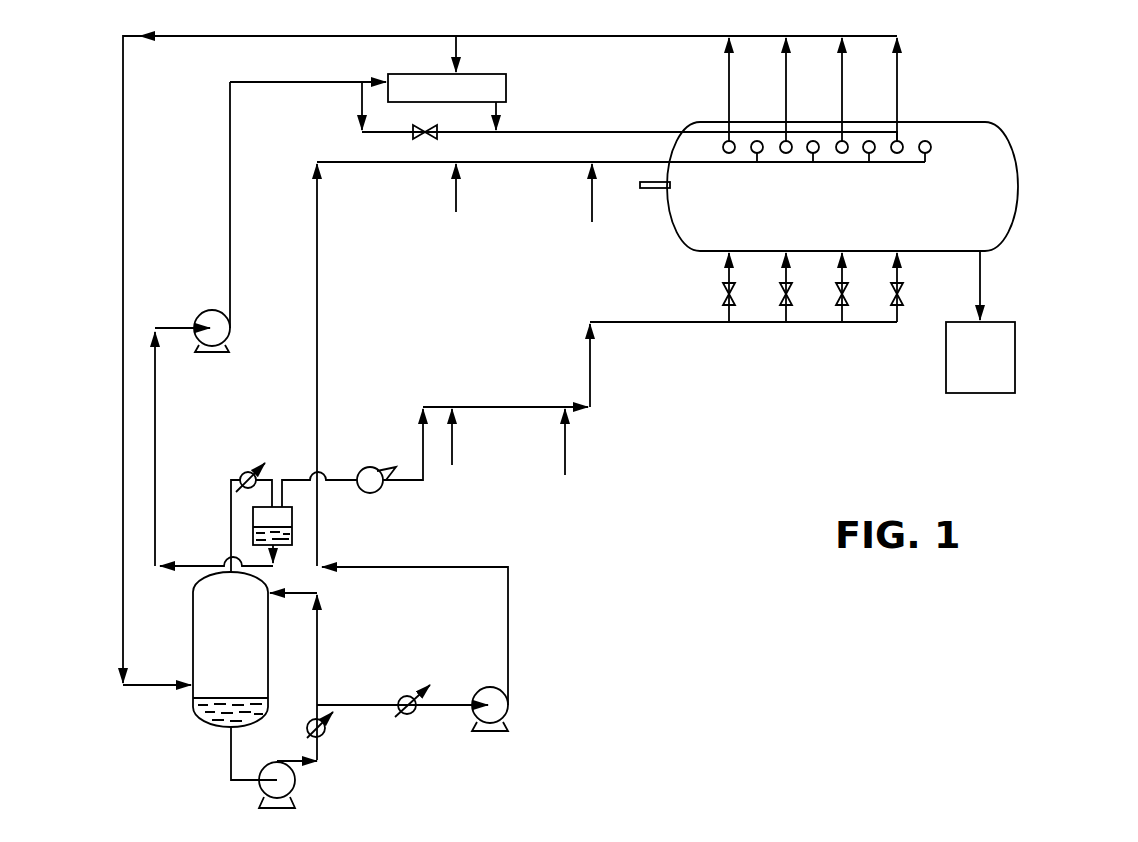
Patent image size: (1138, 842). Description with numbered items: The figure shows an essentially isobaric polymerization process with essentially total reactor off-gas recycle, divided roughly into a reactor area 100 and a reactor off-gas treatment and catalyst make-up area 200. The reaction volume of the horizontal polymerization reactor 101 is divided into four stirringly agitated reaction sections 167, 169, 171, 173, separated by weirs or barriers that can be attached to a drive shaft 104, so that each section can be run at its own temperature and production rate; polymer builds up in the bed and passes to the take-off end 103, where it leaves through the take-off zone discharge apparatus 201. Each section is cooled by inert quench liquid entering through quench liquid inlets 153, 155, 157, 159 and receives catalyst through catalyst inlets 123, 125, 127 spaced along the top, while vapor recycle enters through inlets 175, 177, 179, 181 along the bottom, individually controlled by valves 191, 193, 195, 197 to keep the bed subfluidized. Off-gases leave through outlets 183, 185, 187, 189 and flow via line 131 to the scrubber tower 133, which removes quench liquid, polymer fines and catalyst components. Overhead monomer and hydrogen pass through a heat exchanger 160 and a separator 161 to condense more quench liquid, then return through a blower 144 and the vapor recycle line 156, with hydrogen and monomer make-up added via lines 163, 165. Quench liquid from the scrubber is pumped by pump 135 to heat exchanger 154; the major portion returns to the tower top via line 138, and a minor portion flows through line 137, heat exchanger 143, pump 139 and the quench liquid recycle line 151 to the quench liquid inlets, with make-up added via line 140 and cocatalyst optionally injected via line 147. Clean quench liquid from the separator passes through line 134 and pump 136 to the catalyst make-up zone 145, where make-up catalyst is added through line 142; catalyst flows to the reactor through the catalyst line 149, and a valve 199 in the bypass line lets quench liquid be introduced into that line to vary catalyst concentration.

The reactor area 100 is at (892, 153).
The horizontal polymerization reactor 101 is at (1024, 184).
The take-off end 103 is at (1012, 222).
The drive shaft 104 is at (652, 188).
The catalyst inlet 123 is at (723, 143).
The catalyst inlet 125 is at (783, 142).
The catalyst inlet 127 is at (840, 142).
The off-gas line 131 is at (602, 38).
The scrubber tower 133 is at (205, 625).
The quench liquid line 134 is at (157, 398).
The pump 135 is at (297, 778).
The pump 136 is at (217, 311).
The quench liquid line 137 is at (367, 705).
The return line 138 is at (317, 633).
The pump 139 is at (505, 687).
The quench liquid make-up line 140 is at (454, 197).
The make-up catalyst line 142 is at (455, 44).
The heat exchanger 143 is at (408, 693).
The blower 144 is at (373, 490).
The catalyst make-up zone 145 is at (507, 82).
The cocatalyst line 147 is at (590, 198).
The catalyst line 149 is at (592, 132).
The quench liquid recycle line 151 is at (417, 163).
The quench liquid inlet 153 is at (755, 158).
The heat exchanger 154 is at (325, 728).
The quench liquid inlet 155 is at (811, 158).
The vapor recycle line 156 is at (692, 324).
The quench liquid inlet 157 is at (867, 158).
The quench liquid inlet 159 is at (923, 158).
The heat exchanger 160 is at (242, 474).
The separator 161 is at (292, 520).
The make-up line 163 is at (454, 452).
The make-up line 165 is at (567, 452).
The reaction section 167 is at (742, 237).
The reaction section 169 is at (807, 237).
The reaction section 171 is at (860, 237).
The reaction section 173 is at (917, 237).
The vapor recycle inlet 175 is at (726, 268).
The vapor recycle inlet 177 is at (785, 275).
The vapor recycle inlet 179 is at (841, 275).
The vapor recycle inlet 181 is at (895, 275).
The off-gas outlet 183 is at (895, 120).
The off-gas outlet 185 is at (840, 140).
The off-gas outlet 187 is at (783, 140).
The off-gas outlet 189 is at (722, 142).
The valve 191 is at (722, 296).
The valve 193 is at (781, 287).
The valve 195 is at (837, 287).
The valve 197 is at (905, 296).
The valve 199 is at (430, 139).
The reactor off-gas treatment and catalyst make-up area 200 is at (532, 514).
The take-off zone discharge apparatus 201 is at (1008, 353).